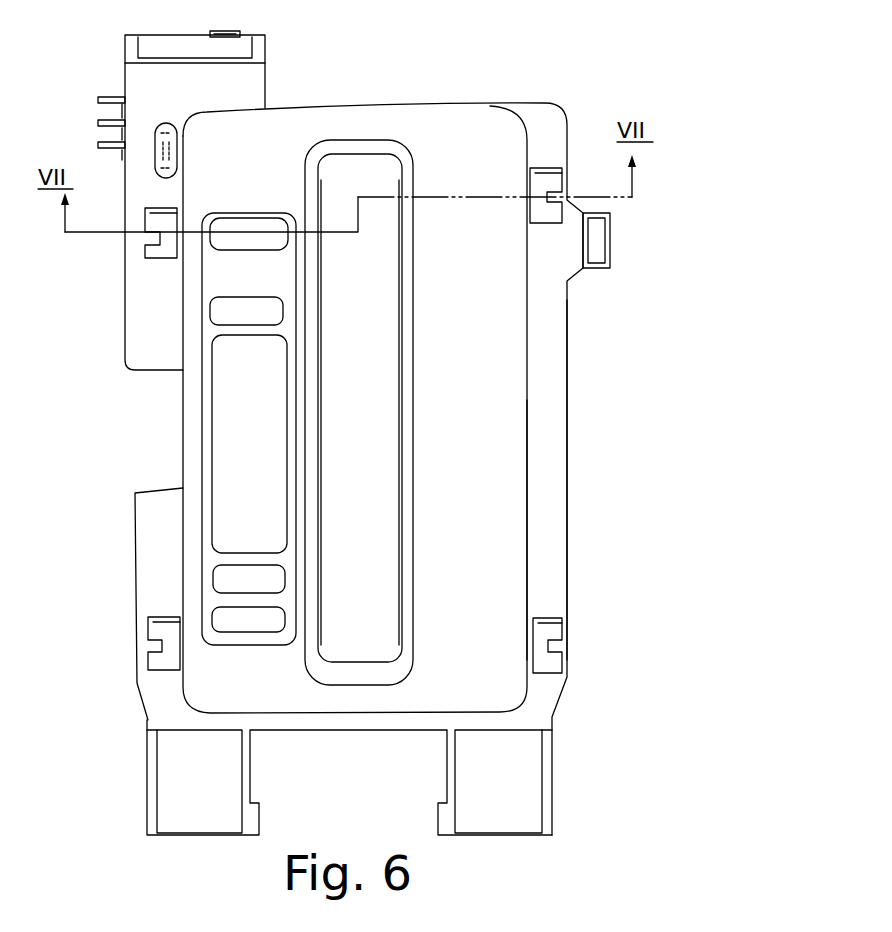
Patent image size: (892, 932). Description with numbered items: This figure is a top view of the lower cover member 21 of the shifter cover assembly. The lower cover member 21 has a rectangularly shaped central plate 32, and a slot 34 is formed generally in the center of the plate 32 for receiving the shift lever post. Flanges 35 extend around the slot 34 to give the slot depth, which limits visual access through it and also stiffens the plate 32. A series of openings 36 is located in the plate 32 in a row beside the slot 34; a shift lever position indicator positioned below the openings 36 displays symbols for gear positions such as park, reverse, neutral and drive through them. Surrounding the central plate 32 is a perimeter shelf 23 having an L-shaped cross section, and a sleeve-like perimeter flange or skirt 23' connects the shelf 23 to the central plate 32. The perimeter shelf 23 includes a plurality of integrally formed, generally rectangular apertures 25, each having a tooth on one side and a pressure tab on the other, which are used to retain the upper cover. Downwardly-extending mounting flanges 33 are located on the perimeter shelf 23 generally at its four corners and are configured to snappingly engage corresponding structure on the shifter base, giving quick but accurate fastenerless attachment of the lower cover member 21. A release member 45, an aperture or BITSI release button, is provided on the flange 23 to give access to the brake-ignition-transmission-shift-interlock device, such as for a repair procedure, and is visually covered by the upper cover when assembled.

The lower cover member 21 is at (513, 40).
The perimeter shelf 23 is at (595, 480).
The perimeter flange or skirt 23' is at (576, 530).
The apertures 25 is at (548, 180).
The central plate 32 is at (510, 311).
The mounting flanges 33 is at (266, 88).
The slot 34 is at (372, 418).
The flanges 35 is at (400, 493).
The openings 36 is at (247, 312).
The release member 45 is at (157, 125).